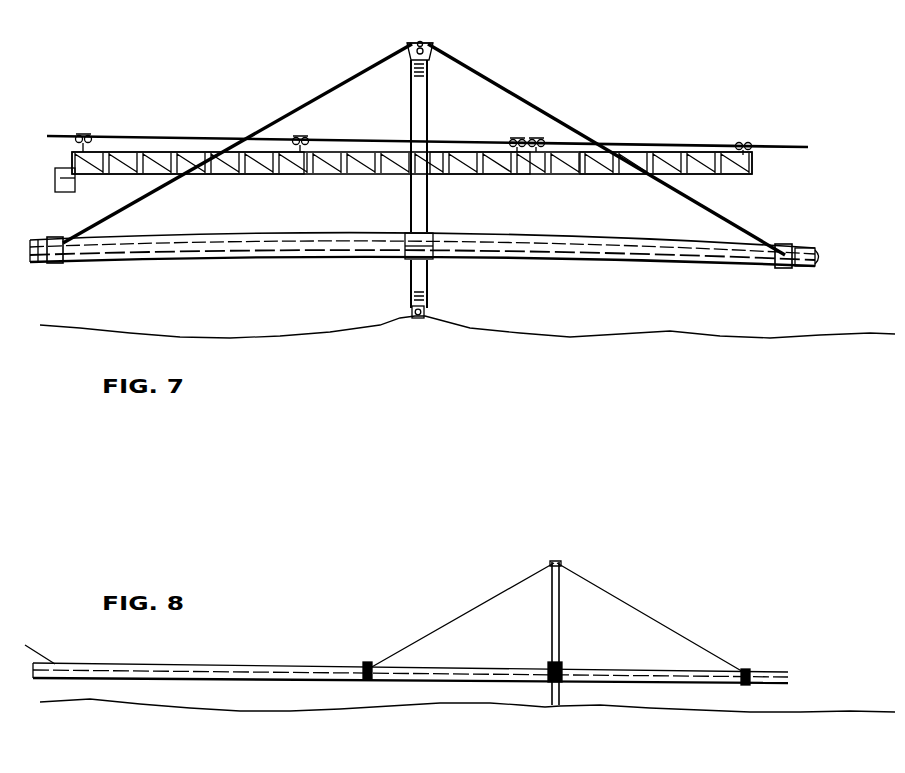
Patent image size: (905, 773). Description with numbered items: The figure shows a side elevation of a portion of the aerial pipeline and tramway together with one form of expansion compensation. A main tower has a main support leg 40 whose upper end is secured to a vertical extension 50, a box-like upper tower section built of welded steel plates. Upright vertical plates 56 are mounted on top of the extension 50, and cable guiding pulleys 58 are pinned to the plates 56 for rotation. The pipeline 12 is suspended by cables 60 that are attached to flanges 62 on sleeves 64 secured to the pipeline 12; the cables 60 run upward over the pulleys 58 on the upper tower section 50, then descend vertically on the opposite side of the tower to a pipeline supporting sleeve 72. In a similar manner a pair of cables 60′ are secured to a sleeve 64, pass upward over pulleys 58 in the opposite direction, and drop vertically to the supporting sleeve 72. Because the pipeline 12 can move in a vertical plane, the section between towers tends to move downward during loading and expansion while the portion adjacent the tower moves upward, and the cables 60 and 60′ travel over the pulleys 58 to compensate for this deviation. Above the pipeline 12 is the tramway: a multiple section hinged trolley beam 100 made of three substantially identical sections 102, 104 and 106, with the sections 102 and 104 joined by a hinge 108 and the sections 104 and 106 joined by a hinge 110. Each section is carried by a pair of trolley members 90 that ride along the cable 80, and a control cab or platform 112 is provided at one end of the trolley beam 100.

In FIG. 7, the pipeline 12 is at (640, 259).
In FIG. 8, the pipeline 12 is at (253, 665).
In FIG. 7, the main support leg 40 is at (427, 293).
In FIG. 7, the vertical extension 50 is at (427, 97).
In FIG. 7, the upright vertical plate 56 is at (424, 42).
In FIG. 8, the upright vertical plate 56 is at (557, 560).
In FIG. 7, the cable guiding pulley 58 is at (433, 47).
In FIG. 7, the cable 60 is at (514, 100).
In FIG. 8, the cable 60 is at (470, 610).
In FIG. 7, the cable 60′ is at (330, 92).
In FIG. 7, the flange 62 is at (790, 270).
In FIG. 7, the sleeve 64 is at (52, 237).
In FIG. 8, the sleeve 64 is at (366, 662).
In FIG. 7, the pipeline supporting sleeve 72 is at (435, 232).
In FIG. 8, the pipeline supporting sleeve 72 is at (562, 665).
In FIG. 7, the cable 80 is at (452, 140).
In FIG. 7, the trolley member 90 is at (90, 145).
In FIG. 7, the multiple section hinged trolley beam 100 is at (412, 183).
In FIG. 7, the trolley beam section 102 is at (222, 175).
In FIG. 7, the trolley beam section 104 is at (488, 175).
In FIG. 7, the trolley beam section 106 is at (625, 175).
In FIG. 7, the hinge 108 is at (312, 147).
In FIG. 7, the hinge 110 is at (528, 138).
In FIG. 7, the control cab or platform 112 is at (55, 183).